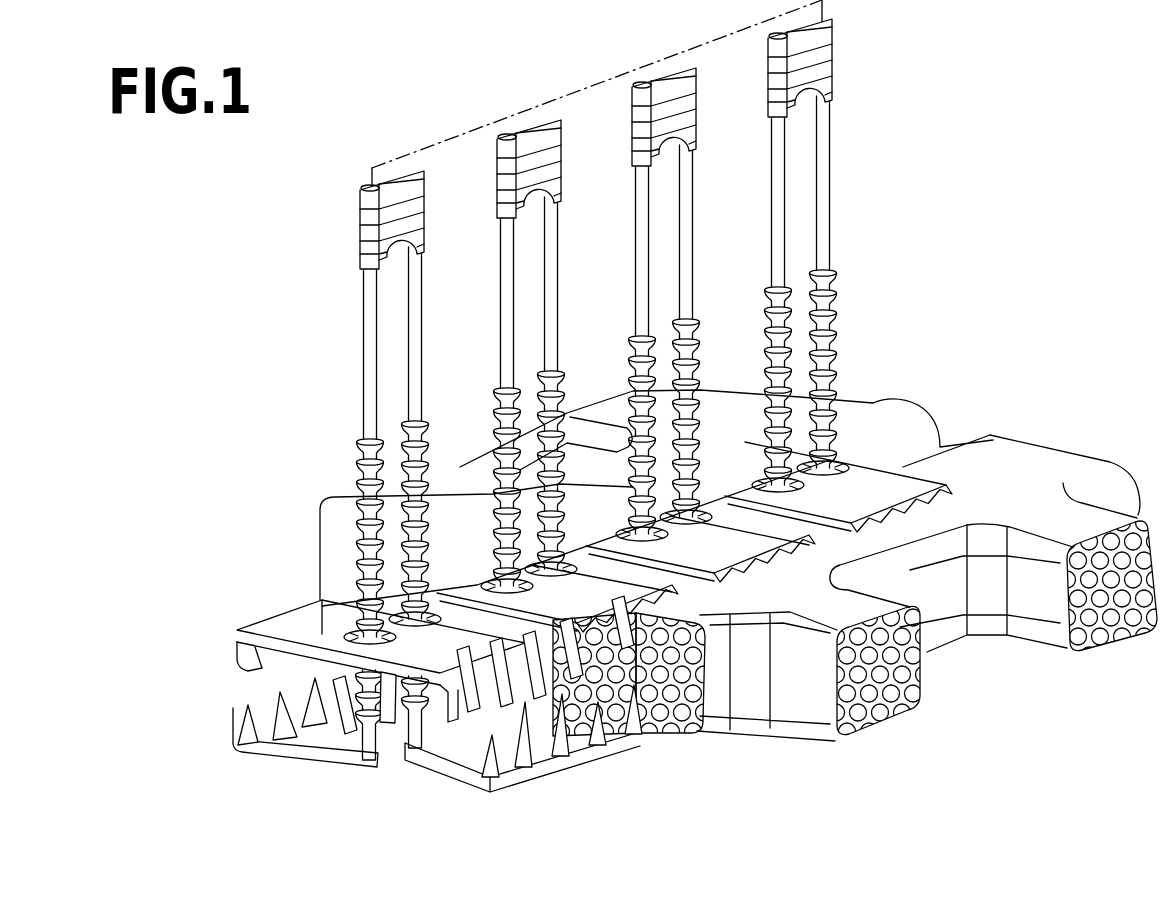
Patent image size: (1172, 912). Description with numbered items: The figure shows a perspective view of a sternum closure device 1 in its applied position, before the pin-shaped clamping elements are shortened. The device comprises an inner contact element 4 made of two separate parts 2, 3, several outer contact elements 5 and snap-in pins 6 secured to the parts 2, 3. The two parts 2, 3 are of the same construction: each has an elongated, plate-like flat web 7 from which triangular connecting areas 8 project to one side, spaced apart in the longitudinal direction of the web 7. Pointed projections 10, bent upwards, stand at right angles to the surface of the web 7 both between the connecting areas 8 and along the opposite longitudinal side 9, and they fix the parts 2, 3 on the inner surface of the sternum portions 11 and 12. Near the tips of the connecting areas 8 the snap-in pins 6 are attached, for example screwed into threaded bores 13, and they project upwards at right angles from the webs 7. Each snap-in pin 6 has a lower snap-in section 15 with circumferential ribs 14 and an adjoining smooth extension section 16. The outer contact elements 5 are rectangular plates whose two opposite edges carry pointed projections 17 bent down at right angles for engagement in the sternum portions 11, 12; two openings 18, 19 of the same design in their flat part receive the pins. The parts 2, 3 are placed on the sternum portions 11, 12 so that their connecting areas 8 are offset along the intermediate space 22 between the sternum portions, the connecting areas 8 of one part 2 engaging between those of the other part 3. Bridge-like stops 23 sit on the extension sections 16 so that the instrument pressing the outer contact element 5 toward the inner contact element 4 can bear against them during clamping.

The sternum closure device 1 is at (866, 158).
The part of inner contact element 2 is at (215, 763).
The part of inner contact element 3 is at (478, 806).
The inner contact element 4 is at (417, 835).
The outer contact element 5 is at (256, 612).
The snap-in pin 6 is at (347, 436).
The web 7 is at (582, 727).
The connecting area 8 is at (427, 749).
The longitudinal side 9 is at (307, 687).
The pointed projection 10 is at (247, 710).
The sternum portion 11 is at (873, 417).
The sternum portion 12 is at (1040, 460).
The threaded bore 13 is at (368, 758).
The circumferential rib 14 is at (833, 297).
The snap-in section 15 is at (833, 344).
The extension section 16 is at (373, 323).
The pointed projection 17 is at (250, 664).
The opening 18 is at (370, 617).
The opening 19 is at (417, 613).
The intermediate space 22 is at (950, 446).
The bridge-like stop 23 is at (822, 66).